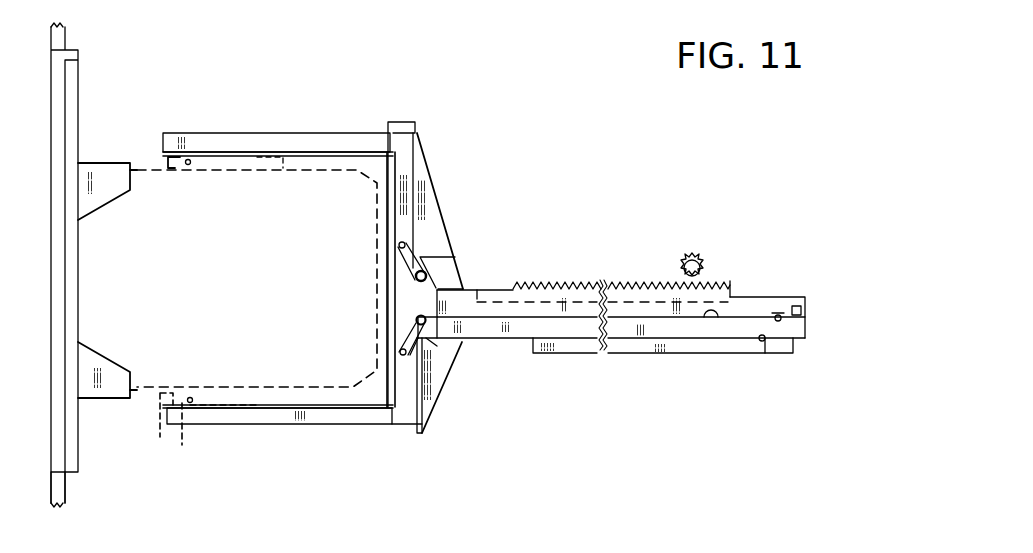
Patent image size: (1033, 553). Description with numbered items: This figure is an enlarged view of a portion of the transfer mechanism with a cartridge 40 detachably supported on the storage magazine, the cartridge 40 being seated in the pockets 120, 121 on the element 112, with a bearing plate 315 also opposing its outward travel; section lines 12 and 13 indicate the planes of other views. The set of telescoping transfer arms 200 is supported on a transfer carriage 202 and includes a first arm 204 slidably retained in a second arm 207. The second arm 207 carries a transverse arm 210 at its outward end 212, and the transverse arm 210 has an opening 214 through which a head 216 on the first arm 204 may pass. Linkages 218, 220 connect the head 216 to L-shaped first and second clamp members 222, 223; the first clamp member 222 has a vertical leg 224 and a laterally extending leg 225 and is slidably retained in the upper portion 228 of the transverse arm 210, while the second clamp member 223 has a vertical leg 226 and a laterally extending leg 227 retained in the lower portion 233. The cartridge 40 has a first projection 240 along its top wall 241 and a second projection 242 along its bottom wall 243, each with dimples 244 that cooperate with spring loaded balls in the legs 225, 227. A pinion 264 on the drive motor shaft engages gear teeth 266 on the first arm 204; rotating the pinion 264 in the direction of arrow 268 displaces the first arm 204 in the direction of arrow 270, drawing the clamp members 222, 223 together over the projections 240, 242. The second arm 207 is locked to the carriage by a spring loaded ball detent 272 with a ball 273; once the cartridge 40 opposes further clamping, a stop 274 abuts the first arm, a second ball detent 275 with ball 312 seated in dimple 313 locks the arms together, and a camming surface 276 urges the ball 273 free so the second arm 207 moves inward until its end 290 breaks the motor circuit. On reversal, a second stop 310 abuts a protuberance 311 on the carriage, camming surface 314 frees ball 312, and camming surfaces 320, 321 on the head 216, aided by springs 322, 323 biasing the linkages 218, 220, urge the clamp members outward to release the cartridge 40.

The section line 12- 12 is at (729, 200).
The section line 13- 13 is at (42, 105).
The cartridge 40 is at (307, 178).
The element 112 is at (79, 86).
The pocket 120 is at (99, 163).
The pocket 121 is at (113, 390).
The telescoping transfer arms 200 is at (603, 236).
The transfer carriage 202 is at (661, 355).
The first arm 204 is at (612, 288).
The second arm 207 is at (621, 355).
The transverse arm 210 is at (437, 228).
The outward end 212 is at (456, 340).
The opening 214 is at (446, 276).
The head 216 is at (410, 330).
The linkage 218 is at (424, 260).
The linkage 220 is at (441, 372).
The first clamp member 222 is at (388, 150).
The second clamp member 223 is at (407, 413).
The vertical leg 224 is at (403, 172).
The laterally extending leg 225 is at (184, 133).
The vertical leg 226 is at (409, 400).
The laterally extending leg 227 is at (324, 414).
The upper portion 228 is at (422, 176).
The lower portion 233 is at (437, 398).
The first projection 240 is at (168, 157).
The top wall 241 is at (147, 158).
The second projection 242 is at (185, 450).
The bottom wall 243 is at (153, 430).
The dimples 244 is at (260, 168).
The pinion 264 is at (680, 266).
The gear teeth 266 is at (556, 287).
The arrow 268 is at (705, 254).
The arrow 270 is at (538, 240).
The spring loaded ball detent 272 is at (767, 336).
The spring loaded ball 273 is at (768, 342).
The stop 274 is at (808, 311).
The spring loaded ball detent 275 is at (780, 310).
The camming surface 276 is at (760, 341).
The end 290 is at (808, 320).
The second stop 310 is at (800, 343).
The protuberance 311 is at (795, 354).
The spring loaded ball 312 is at (800, 306).
The dimple 313 is at (708, 305).
The camming surface 314 is at (718, 308).
The bearing plate 315 is at (58, 452).
The camming surface 320 is at (405, 282).
The camming surface 321 is at (395, 326).
The spring 322 is at (412, 300).
The spring 323 is at (400, 338).